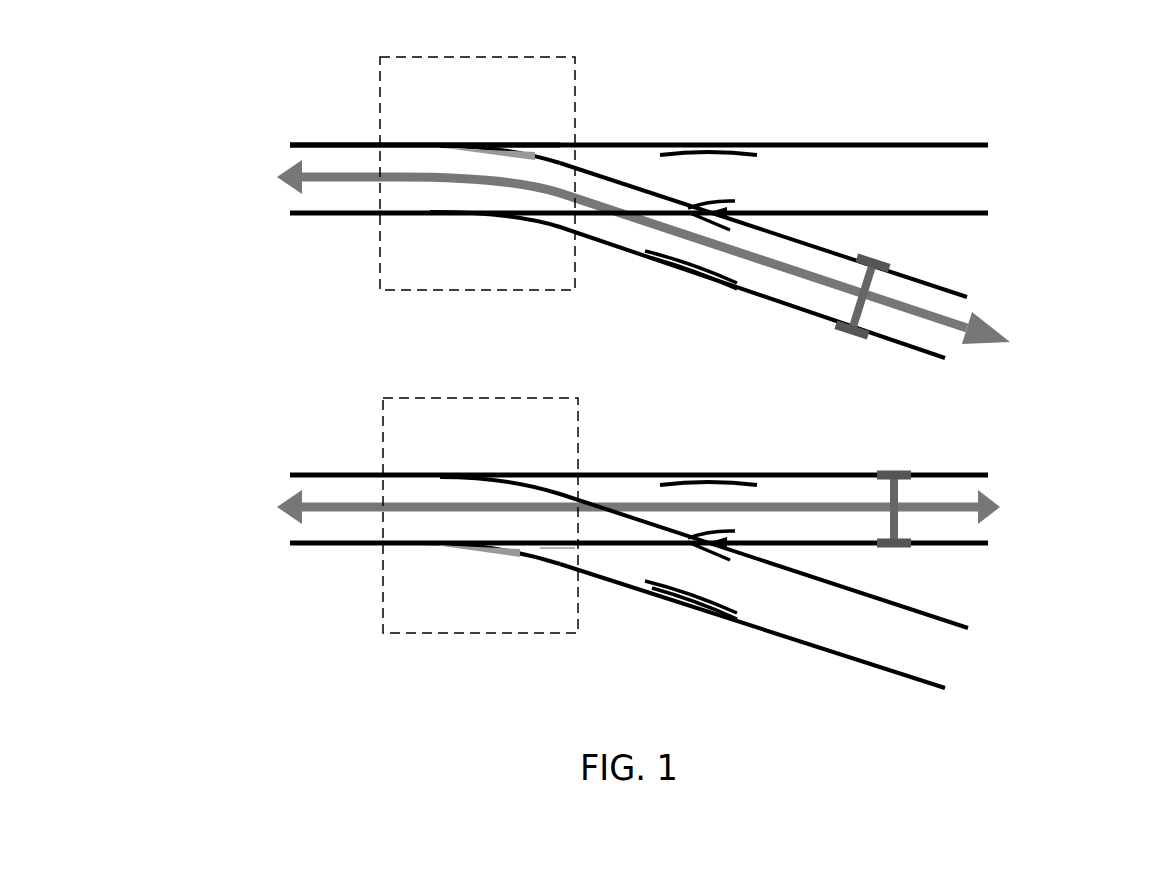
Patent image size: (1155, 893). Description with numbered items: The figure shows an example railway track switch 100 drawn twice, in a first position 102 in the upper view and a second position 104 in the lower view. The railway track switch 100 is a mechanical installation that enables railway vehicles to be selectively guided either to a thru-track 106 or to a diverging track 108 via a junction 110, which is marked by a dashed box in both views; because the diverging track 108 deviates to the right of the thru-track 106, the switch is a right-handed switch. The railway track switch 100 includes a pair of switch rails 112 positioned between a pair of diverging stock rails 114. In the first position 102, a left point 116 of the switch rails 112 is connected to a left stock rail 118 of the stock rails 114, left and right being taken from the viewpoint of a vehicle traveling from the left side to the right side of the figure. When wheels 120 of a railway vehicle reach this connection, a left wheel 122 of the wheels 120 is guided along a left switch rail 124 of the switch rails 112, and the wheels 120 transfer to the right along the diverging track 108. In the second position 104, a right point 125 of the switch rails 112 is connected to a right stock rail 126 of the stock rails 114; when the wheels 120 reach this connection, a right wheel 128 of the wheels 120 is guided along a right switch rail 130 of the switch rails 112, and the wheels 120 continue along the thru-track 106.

The railway track switch 100 is at (633, 369).
The first position 102 is at (696, 236).
The second position 104 is at (697, 548).
The thru-track 106 is at (797, 202).
The diverging track 108 is at (801, 294).
The junction 110 is at (577, 90).
The switch rails 112 is at (769, 230).
The stock rails 114 is at (639, 557).
The left point 116 is at (505, 148).
The left stock rail 118 is at (412, 145).
The wheels 120 is at (835, 317).
The left wheel 122 is at (897, 473).
The left switch rail 124 is at (590, 160).
The right point 125 is at (480, 549).
The right stock rail 126 is at (506, 556).
The right wheel 128 is at (885, 546).
The right switch rail 130 is at (567, 546).